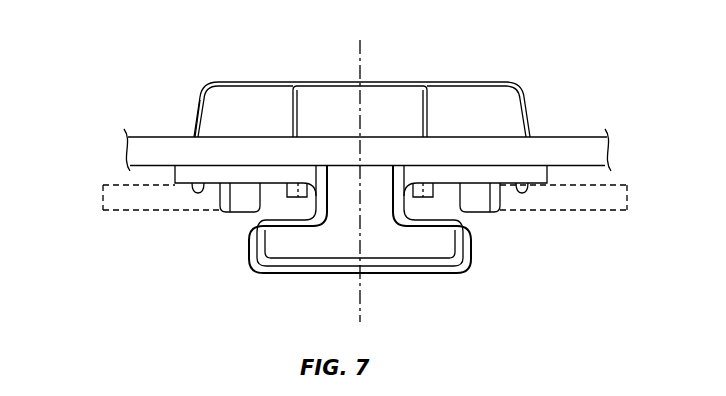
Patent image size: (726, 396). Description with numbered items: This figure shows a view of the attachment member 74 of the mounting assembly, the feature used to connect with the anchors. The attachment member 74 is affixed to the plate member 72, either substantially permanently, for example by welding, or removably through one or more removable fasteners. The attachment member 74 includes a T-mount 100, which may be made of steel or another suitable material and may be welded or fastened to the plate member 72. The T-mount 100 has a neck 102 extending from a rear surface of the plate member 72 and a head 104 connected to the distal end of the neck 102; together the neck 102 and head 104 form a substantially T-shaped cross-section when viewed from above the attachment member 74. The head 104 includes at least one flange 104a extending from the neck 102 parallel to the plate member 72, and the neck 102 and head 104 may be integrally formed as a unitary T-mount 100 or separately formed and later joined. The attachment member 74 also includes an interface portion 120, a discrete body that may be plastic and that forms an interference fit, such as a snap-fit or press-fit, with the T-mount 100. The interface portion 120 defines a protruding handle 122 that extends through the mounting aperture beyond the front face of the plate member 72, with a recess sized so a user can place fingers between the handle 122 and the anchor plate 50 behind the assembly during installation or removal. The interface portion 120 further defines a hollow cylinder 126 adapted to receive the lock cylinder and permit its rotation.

The attachment member 74 is at (587, 58).
The plate member 72 is at (567, 137).
The interface portion 120 is at (475, 82).
The handle 122 is at (210, 113).
The hollow cylinder 126 is at (308, 113).
The neck 102 is at (347, 202).
The anchor plate 50 is at (131, 214).
The T-mount 100 is at (266, 228).
The head 104 is at (347, 250).
The flange 104a is at (288, 250).